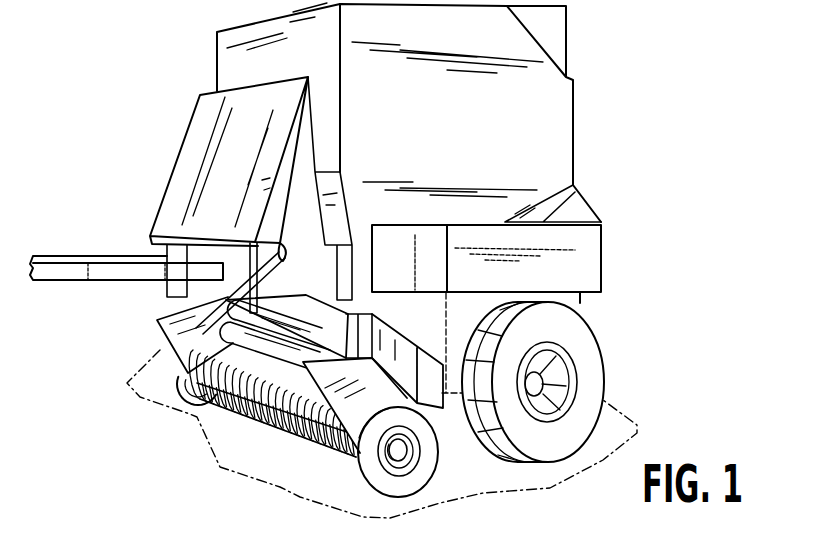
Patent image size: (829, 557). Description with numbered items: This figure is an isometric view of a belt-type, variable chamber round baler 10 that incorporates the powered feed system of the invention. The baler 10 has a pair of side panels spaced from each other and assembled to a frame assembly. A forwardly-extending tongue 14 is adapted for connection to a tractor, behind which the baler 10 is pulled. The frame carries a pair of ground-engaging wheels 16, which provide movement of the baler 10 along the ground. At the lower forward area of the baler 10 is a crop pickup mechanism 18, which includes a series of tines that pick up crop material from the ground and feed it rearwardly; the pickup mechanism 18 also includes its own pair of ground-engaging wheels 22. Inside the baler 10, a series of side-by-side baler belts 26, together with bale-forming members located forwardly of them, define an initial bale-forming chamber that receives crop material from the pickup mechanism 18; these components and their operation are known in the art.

The round baler 10 is at (173, 63).
The tongue 14 is at (100, 248).
The ground-engaging wheels 16 is at (602, 338).
The crop pickup mechanism 18 is at (218, 411).
The ground-engaging wheels 22 is at (174, 378).
The baler belts 26 is at (259, 556).